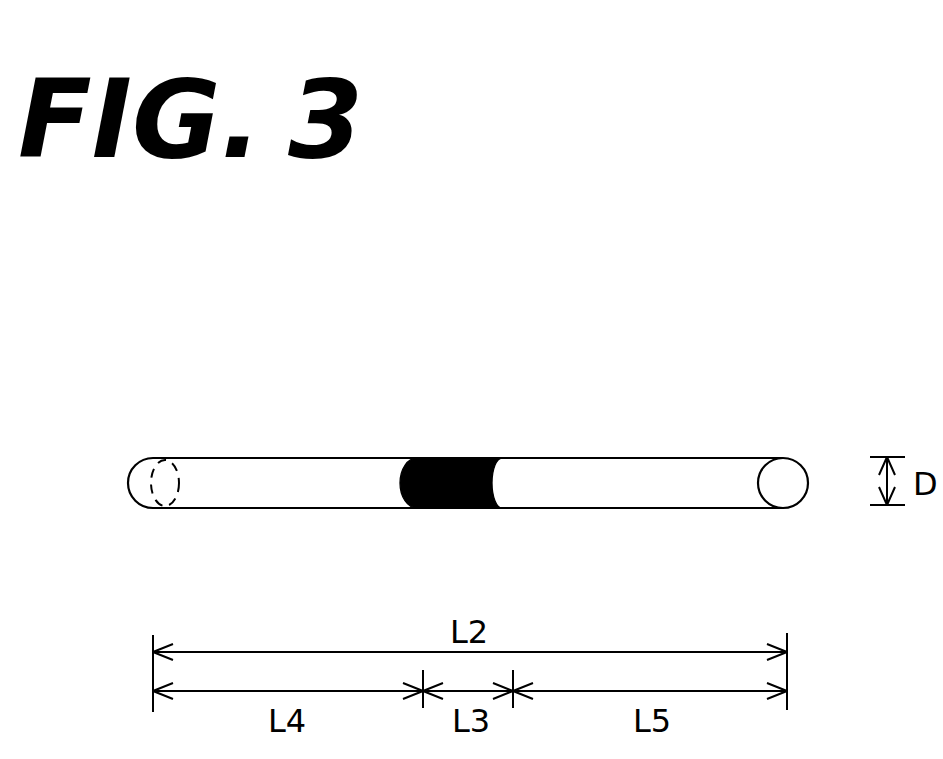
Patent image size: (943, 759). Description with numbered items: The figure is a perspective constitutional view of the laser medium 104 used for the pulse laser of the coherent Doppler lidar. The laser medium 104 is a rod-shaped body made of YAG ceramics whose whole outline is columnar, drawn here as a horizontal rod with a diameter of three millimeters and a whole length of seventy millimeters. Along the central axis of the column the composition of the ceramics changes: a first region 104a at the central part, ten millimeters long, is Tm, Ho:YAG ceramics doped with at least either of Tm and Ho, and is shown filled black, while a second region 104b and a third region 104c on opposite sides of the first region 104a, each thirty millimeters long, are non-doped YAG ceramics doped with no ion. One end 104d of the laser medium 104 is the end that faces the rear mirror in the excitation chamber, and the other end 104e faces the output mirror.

The laser medium 104 is at (750, 422).
The first region 104a is at (460, 457).
The second region 104b is at (282, 473).
The third region 104c is at (648, 473).
The end 104d is at (150, 509).
The other end 104e is at (788, 478).